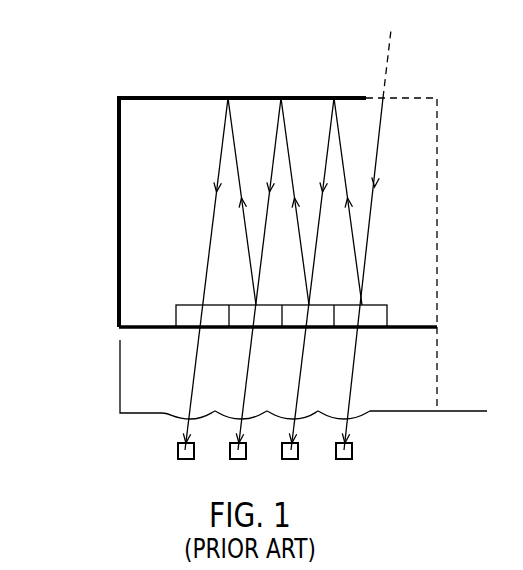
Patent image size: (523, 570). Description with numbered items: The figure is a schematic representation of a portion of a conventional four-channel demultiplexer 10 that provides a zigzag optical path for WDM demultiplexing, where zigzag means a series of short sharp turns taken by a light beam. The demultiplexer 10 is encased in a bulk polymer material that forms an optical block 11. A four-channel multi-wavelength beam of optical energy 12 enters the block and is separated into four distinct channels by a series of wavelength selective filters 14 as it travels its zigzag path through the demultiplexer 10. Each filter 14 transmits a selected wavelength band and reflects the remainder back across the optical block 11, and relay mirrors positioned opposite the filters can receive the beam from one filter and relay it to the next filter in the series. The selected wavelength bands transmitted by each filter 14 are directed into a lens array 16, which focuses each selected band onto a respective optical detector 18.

The demultiplexer 10 is at (203, 83).
The optical block 11 is at (118, 192).
The multi-wavelength beam of optical energy 12 is at (377, 182).
The wavelength selective filters 14 is at (376, 319).
The lens array 16 is at (120, 377).
The optical detector 18 is at (178, 450).